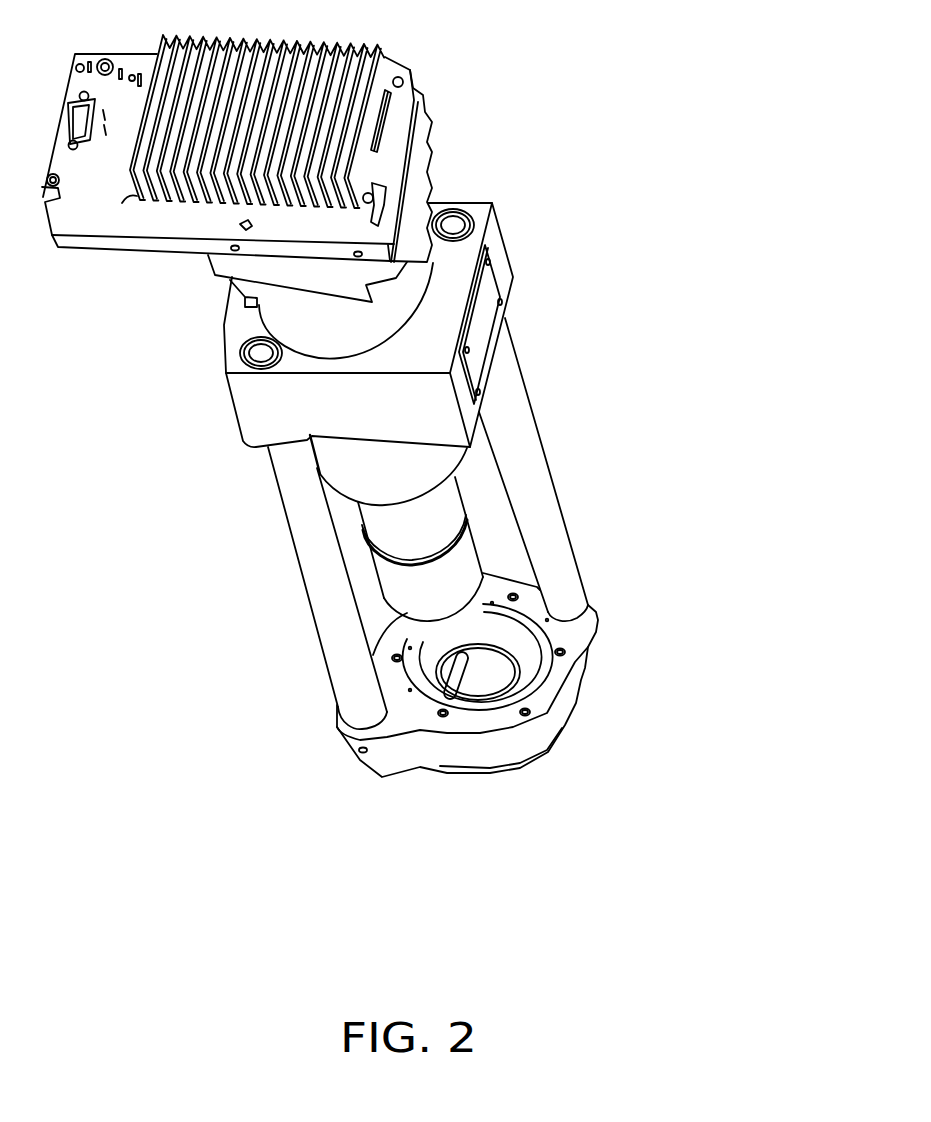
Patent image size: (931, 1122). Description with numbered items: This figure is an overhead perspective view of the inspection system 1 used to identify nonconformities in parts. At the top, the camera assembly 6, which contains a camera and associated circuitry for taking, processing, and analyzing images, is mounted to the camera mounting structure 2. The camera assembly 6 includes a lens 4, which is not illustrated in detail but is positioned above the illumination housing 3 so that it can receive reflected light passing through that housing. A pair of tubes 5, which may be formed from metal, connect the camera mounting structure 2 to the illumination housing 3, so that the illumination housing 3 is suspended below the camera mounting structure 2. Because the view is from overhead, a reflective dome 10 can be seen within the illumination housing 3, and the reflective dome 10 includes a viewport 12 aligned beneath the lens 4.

The inspection system 1 is at (643, 337).
The camera mounting structure 2 is at (500, 250).
The illumination housing 3 is at (577, 717).
The lens 4 is at (468, 563).
The pair of tubes 5 is at (568, 573).
The camera assembly 6 is at (413, 98).
The reflective dome 10 is at (477, 690).
The viewport 12 is at (465, 684).